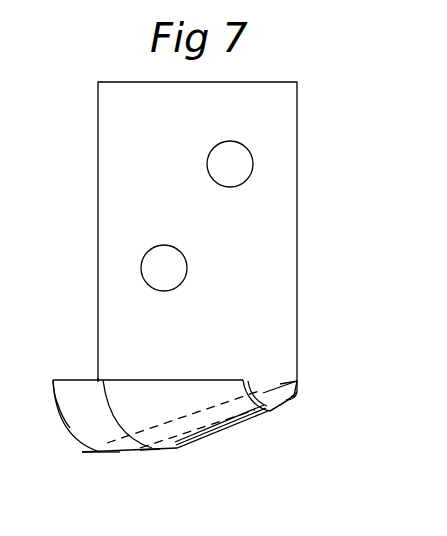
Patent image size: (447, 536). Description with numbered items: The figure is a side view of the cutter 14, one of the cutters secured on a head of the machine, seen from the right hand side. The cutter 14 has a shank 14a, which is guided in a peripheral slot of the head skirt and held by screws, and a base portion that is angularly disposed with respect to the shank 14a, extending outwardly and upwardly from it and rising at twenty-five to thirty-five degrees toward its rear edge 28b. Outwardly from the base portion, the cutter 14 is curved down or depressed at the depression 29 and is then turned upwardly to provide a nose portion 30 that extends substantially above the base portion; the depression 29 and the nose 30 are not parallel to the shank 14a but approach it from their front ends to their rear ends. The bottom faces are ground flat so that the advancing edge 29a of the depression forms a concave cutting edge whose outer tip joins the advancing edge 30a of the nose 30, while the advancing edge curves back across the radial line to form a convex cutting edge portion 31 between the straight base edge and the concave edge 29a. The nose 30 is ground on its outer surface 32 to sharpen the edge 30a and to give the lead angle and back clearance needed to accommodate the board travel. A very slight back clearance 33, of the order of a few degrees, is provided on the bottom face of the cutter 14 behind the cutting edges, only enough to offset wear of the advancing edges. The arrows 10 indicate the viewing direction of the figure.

The shank 14a is at (176, 172).
The cutter 14 is at (94, 378).
The viewing direction arrow 10 is at (155, 365).
The nose portion 30 is at (162, 406).
The surface 32 is at (67, 397).
The advancing edge of the nose 30a is at (63, 420).
The convex cutting edge portion 31 is at (82, 452).
The advancing edge of the depression 29a is at (108, 452).
The clearance 33 is at (152, 452).
The rear edge 28b is at (288, 388).
The depression 29 is at (283, 402).